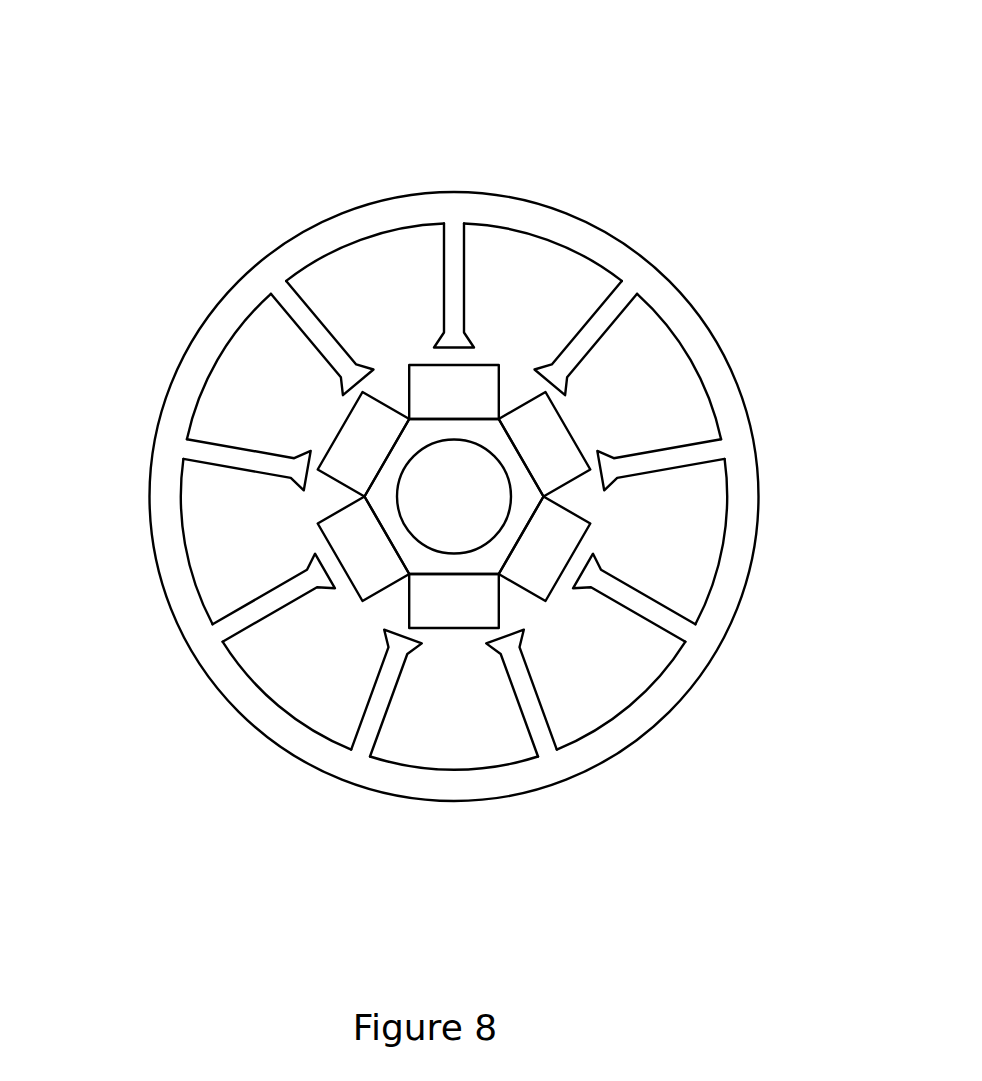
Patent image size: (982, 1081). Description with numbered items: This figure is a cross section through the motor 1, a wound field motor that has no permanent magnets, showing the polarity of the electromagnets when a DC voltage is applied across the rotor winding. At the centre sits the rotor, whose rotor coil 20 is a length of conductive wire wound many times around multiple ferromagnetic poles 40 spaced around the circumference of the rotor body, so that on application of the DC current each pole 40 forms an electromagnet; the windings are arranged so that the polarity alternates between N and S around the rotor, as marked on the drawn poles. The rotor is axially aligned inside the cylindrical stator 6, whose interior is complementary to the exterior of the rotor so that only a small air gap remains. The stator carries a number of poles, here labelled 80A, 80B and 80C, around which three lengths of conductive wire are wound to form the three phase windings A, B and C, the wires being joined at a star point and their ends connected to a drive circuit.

The electric motor 1 is at (276, 154).
The stator yoke / housing ring 6 is at (757, 470).
The rotor coil 20 is at (573, 505).
The ferromagnetic pole 40 is at (482, 378).
The stator pole of phase A 80A is at (450, 272).
The stator pole of phase B 80B is at (297, 323).
The stator pole of phase C 80C is at (590, 310).